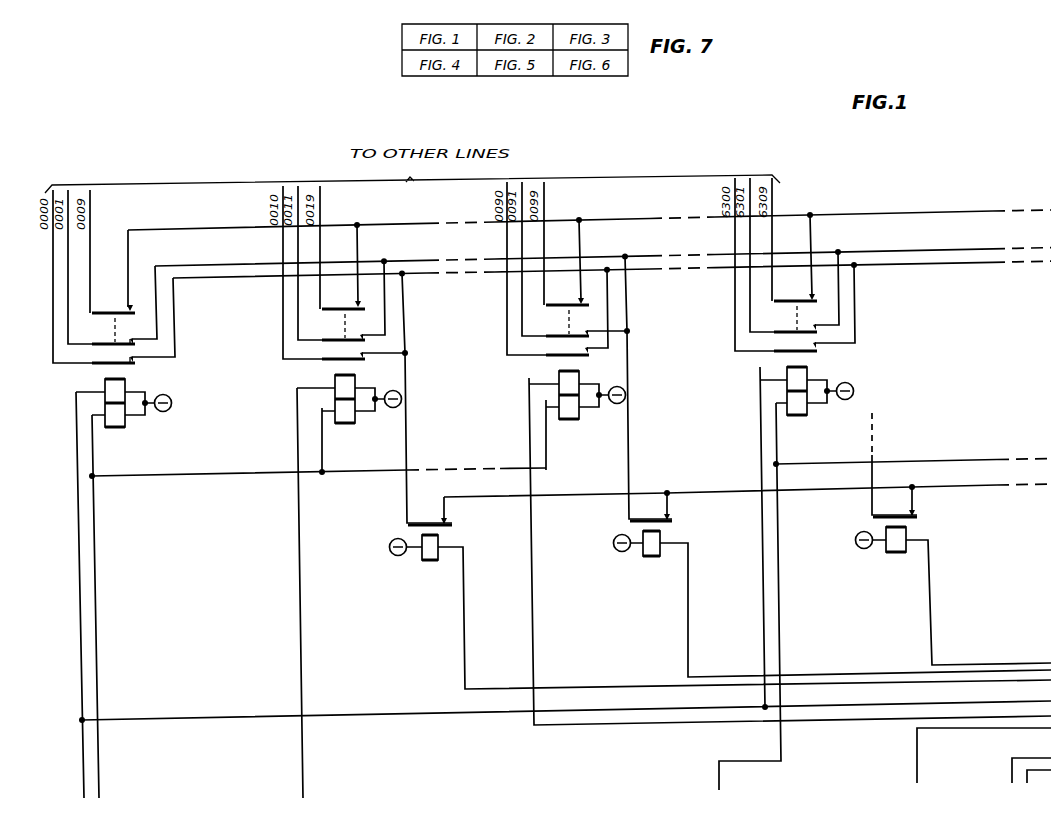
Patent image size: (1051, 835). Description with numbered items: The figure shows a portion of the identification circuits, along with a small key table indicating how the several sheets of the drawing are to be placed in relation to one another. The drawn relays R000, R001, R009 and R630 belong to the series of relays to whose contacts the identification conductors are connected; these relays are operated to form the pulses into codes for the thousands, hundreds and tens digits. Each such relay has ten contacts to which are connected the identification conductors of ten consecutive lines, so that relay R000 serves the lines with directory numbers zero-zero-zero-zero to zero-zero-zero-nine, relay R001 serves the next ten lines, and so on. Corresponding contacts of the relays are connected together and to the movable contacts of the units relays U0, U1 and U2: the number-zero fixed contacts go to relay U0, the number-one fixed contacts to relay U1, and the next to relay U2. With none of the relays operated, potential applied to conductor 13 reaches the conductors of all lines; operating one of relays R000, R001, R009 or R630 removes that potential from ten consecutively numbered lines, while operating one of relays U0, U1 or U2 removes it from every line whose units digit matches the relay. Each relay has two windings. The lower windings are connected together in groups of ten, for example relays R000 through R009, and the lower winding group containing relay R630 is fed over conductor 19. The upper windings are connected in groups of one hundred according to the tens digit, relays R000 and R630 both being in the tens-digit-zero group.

The conductor 13 is at (660, 489).
The conductor 19 is at (781, 614).
The relay R000 is at (105, 388).
The relay R001 is at (335, 304).
The relay R009 is at (559, 300).
The relay R630 is at (787, 296).
The relay U0 is at (440, 540).
The relay U1 is at (661, 536).
The relay U2 is at (906, 536).